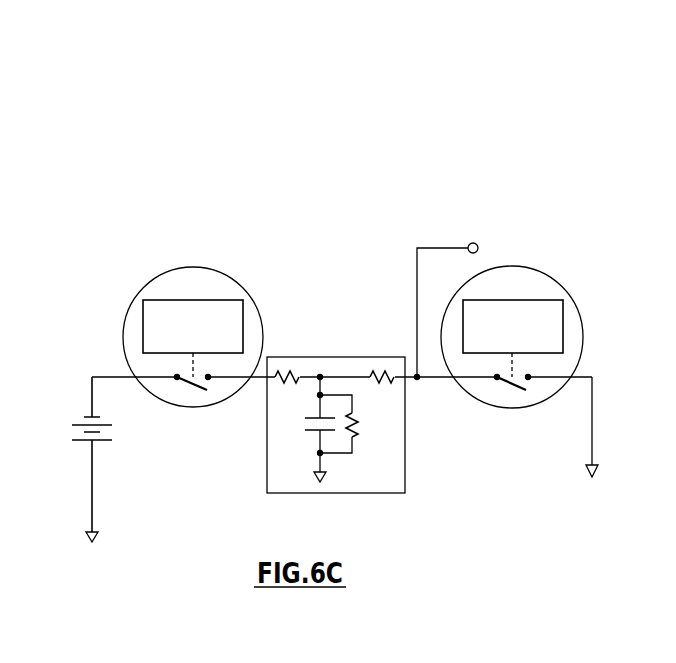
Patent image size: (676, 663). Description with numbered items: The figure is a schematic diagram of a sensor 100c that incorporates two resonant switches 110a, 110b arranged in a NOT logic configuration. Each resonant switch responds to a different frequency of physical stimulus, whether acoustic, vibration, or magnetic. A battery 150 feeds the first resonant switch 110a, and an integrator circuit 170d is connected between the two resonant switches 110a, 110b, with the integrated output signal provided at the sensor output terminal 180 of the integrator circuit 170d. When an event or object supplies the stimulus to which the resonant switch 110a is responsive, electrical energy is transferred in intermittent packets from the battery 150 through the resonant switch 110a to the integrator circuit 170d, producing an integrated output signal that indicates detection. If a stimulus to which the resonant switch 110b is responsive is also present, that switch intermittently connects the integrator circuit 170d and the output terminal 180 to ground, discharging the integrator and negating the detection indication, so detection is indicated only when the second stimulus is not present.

The sensor 100c is at (575, 108).
The resonant switch 110a is at (164, 269).
The resonant switch 110b is at (559, 284).
The battery 150 is at (80, 418).
The integrator circuit 170d is at (315, 357).
The sensor output terminal 180 is at (476, 243).